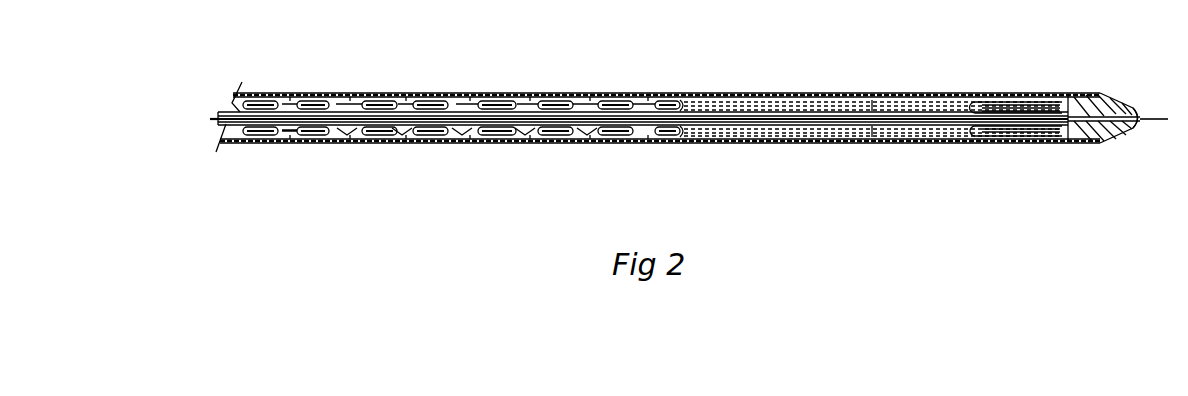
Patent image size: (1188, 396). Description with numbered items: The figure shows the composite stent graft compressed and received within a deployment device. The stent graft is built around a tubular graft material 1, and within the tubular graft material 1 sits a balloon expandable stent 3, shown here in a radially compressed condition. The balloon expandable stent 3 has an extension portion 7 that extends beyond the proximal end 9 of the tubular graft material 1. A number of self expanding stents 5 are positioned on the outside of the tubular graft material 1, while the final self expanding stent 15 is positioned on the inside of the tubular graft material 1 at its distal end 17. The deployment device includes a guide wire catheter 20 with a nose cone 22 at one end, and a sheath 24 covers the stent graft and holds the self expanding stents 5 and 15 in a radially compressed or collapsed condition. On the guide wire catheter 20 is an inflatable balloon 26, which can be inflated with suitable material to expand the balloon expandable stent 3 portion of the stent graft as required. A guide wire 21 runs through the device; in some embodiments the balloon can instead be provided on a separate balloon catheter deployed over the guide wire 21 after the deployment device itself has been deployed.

The tubular graft material 1 is at (685, 143).
The balloon expandable stent 3 is at (427, 143).
The self expanding stents 5 is at (820, 143).
The extension portion 7 is at (267, 143).
The proximal end 9 is at (347, 143).
The final self expanding stent 15 is at (997, 143).
The distal end 17 is at (1075, 143).
The guide wire catheter 20 is at (878, 143).
The guide wire 21 is at (1155, 122).
The nose cone 22 is at (1122, 108).
The sheath 24 is at (655, 93).
The inflatable balloon 26 is at (520, 143).